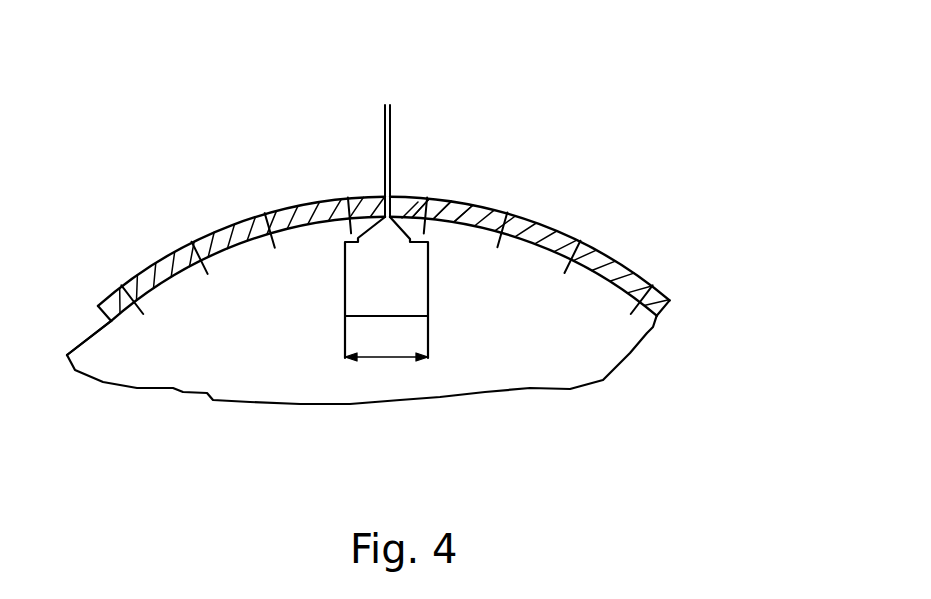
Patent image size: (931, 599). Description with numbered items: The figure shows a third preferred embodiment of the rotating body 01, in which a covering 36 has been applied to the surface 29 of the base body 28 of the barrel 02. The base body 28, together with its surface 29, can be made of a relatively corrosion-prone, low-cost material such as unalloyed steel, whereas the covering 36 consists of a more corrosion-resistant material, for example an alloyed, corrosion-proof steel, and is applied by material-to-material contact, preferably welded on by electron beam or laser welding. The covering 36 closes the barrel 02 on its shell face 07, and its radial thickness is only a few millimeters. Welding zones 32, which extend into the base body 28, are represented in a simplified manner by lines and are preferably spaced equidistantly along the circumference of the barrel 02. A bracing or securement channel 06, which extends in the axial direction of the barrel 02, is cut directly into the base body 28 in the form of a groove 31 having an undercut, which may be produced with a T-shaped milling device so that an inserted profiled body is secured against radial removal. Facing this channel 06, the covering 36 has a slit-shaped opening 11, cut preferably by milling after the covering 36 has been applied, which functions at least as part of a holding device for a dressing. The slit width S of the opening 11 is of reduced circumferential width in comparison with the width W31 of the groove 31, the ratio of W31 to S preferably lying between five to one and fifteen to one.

The rotating body 01 is at (399, 33).
The barrel 02 is at (708, 303).
The bracing or securement channel 06 is at (362, 308).
The shell face 07 is at (311, 203).
The slit-shaped opening 11 is at (392, 195).
The base body 28 is at (537, 370).
The surface 29 is at (91, 328).
The groove 31 is at (397, 320).
The welding zones 32 is at (568, 237).
The covering 36 is at (228, 228).
The slit width S is at (420, 110).
The width of the groove W31 is at (370, 358).